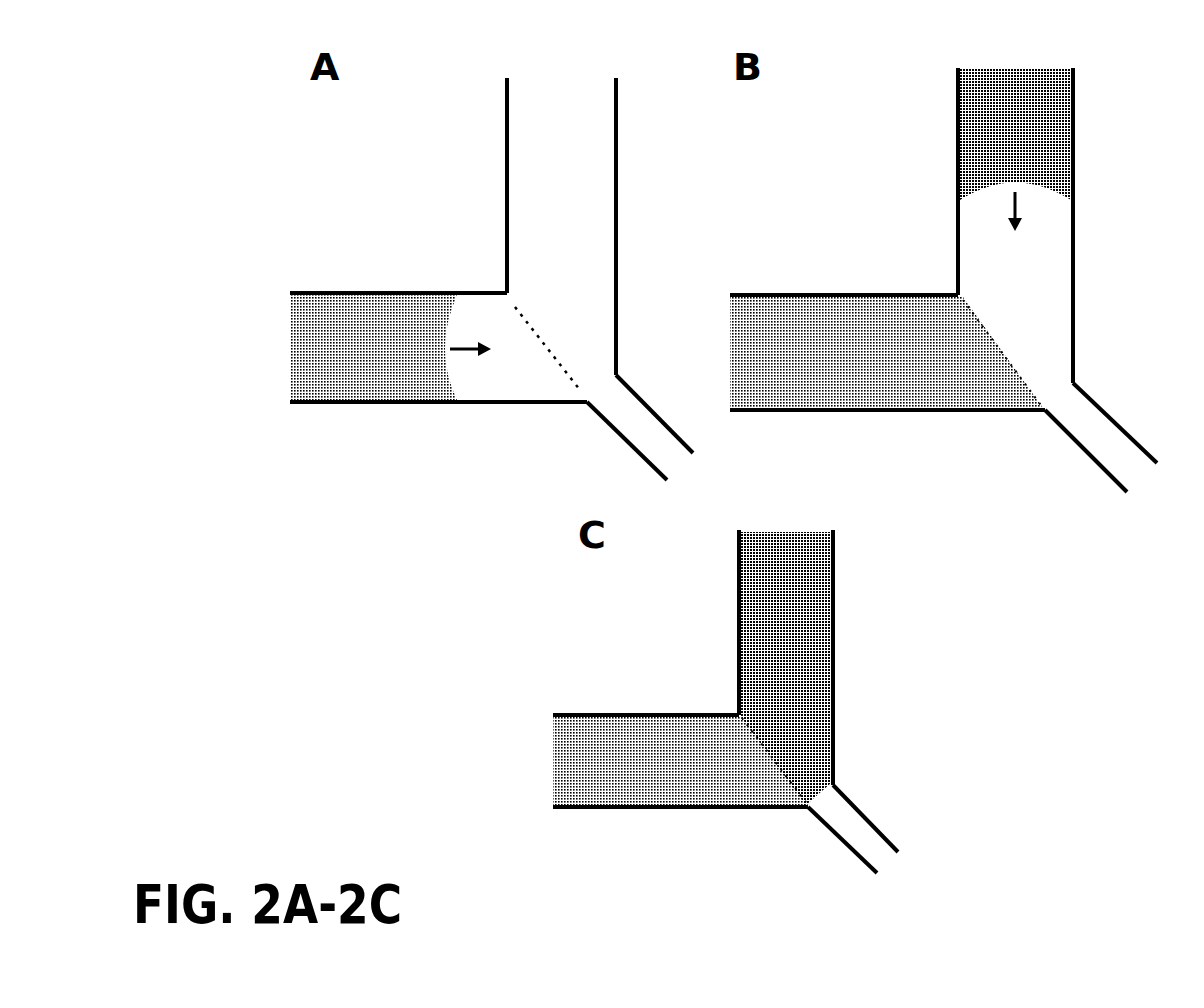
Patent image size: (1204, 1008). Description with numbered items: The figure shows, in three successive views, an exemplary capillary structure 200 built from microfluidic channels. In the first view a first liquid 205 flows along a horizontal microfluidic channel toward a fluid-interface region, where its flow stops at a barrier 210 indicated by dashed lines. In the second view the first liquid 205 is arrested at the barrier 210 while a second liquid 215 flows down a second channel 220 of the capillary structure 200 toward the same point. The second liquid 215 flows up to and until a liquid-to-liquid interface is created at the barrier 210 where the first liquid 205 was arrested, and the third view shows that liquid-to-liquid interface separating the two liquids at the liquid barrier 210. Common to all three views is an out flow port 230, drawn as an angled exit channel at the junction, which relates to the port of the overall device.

In FIG. 2A, the capillary structure 200 is at (626, 51).
In FIG. 2B, the capillary structure 200 is at (1136, 57).
In FIG. 2C, the capillary structure 200 is at (877, 515).
In FIG. 2A, the first liquid 205 is at (413, 385).
In FIG. 2B, the first liquid 205 is at (872, 395).
In FIG. 2C, the first liquid 205 is at (630, 792).
In FIG. 2A, the barrier 210 is at (523, 317).
In FIG. 2B, the barrier 210 is at (983, 327).
In FIG. 2C, the barrier 210 is at (783, 768).
In FIG. 2A, the second liquid 215 is at (561, 226).
In FIG. 2B, the second liquid 215 is at (1060, 158).
In FIG. 2C, the second liquid 215 is at (823, 625).
In FIG. 2B, the second channel 220 is at (1076, 240).
In FIG. 2A, the out flow port 230 is at (630, 395).
In FIG. 2B, the out flow port 230 is at (1130, 438).
In FIG. 2C, the out flow port 230 is at (852, 802).